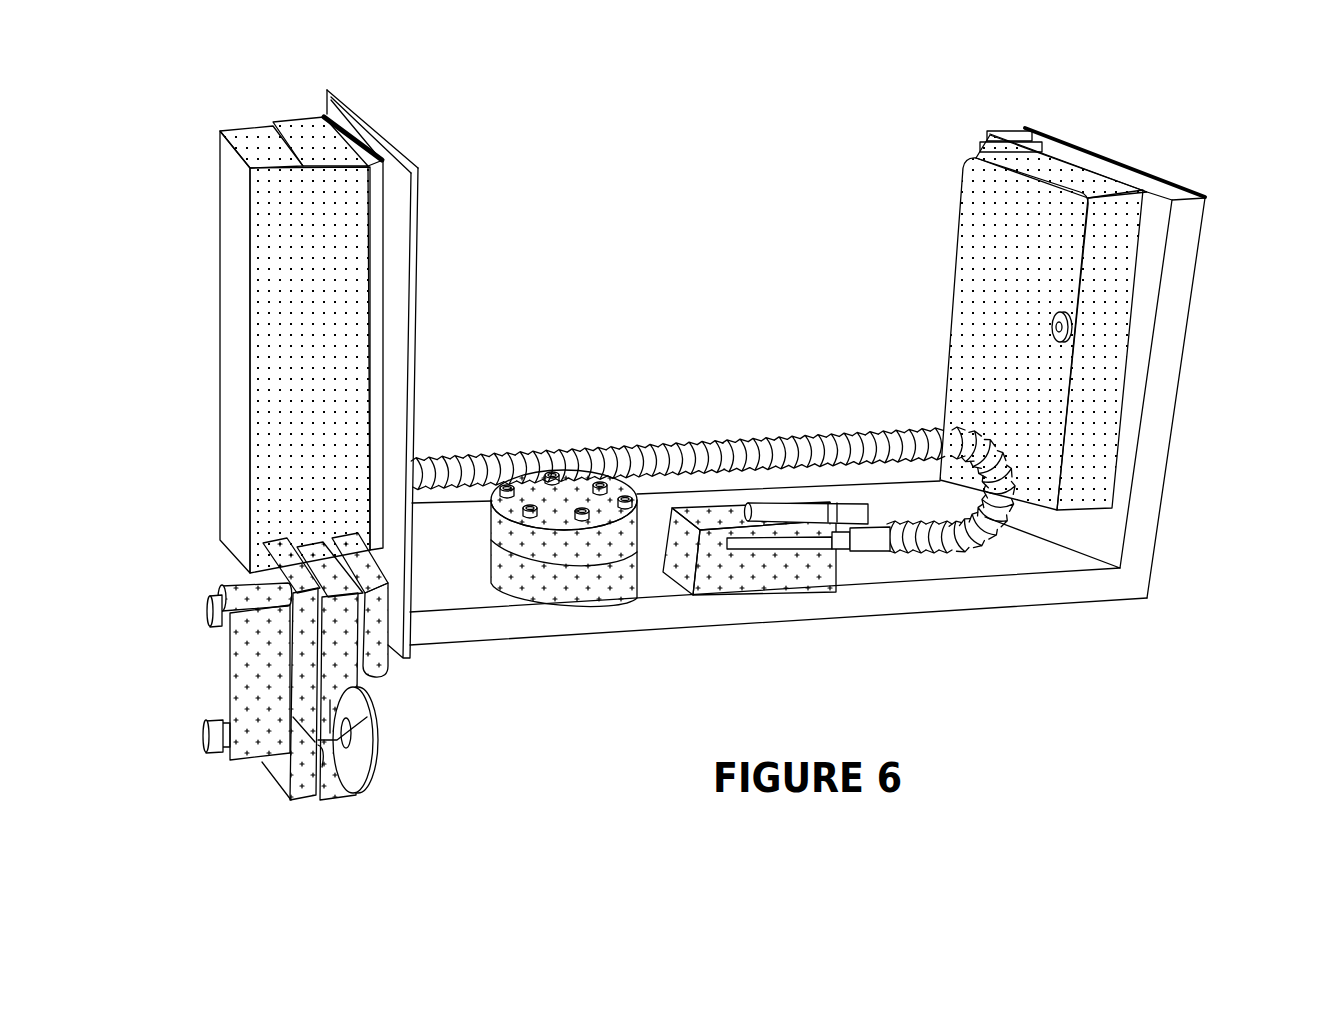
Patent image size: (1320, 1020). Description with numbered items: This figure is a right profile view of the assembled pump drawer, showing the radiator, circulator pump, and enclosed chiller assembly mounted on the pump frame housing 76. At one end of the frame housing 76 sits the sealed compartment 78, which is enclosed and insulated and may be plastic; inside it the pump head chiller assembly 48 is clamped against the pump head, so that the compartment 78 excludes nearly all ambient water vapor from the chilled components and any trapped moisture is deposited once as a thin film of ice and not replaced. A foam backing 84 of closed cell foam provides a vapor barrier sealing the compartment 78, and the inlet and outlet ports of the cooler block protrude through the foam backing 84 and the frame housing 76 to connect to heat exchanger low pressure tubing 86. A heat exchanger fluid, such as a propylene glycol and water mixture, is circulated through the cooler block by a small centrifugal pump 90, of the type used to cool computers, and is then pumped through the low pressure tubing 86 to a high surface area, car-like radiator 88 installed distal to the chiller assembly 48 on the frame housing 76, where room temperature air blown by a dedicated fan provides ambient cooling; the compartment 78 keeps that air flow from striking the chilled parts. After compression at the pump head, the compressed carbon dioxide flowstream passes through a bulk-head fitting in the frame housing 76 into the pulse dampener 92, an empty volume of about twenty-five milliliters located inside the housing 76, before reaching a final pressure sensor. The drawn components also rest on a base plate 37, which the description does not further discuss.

The base plate 37 is at (460, 627).
The pump head chiller assembly 48 is at (263, 770).
The pump frame housing 76 is at (325, 111).
The sealed compartment 78 is at (262, 143).
The foam backing 84 is at (323, 147).
The low pressure tubing 86 is at (980, 547).
The radiator 88 is at (1120, 230).
The centrifugal pump 90 is at (798, 565).
The pulse dampener 92 is at (540, 596).